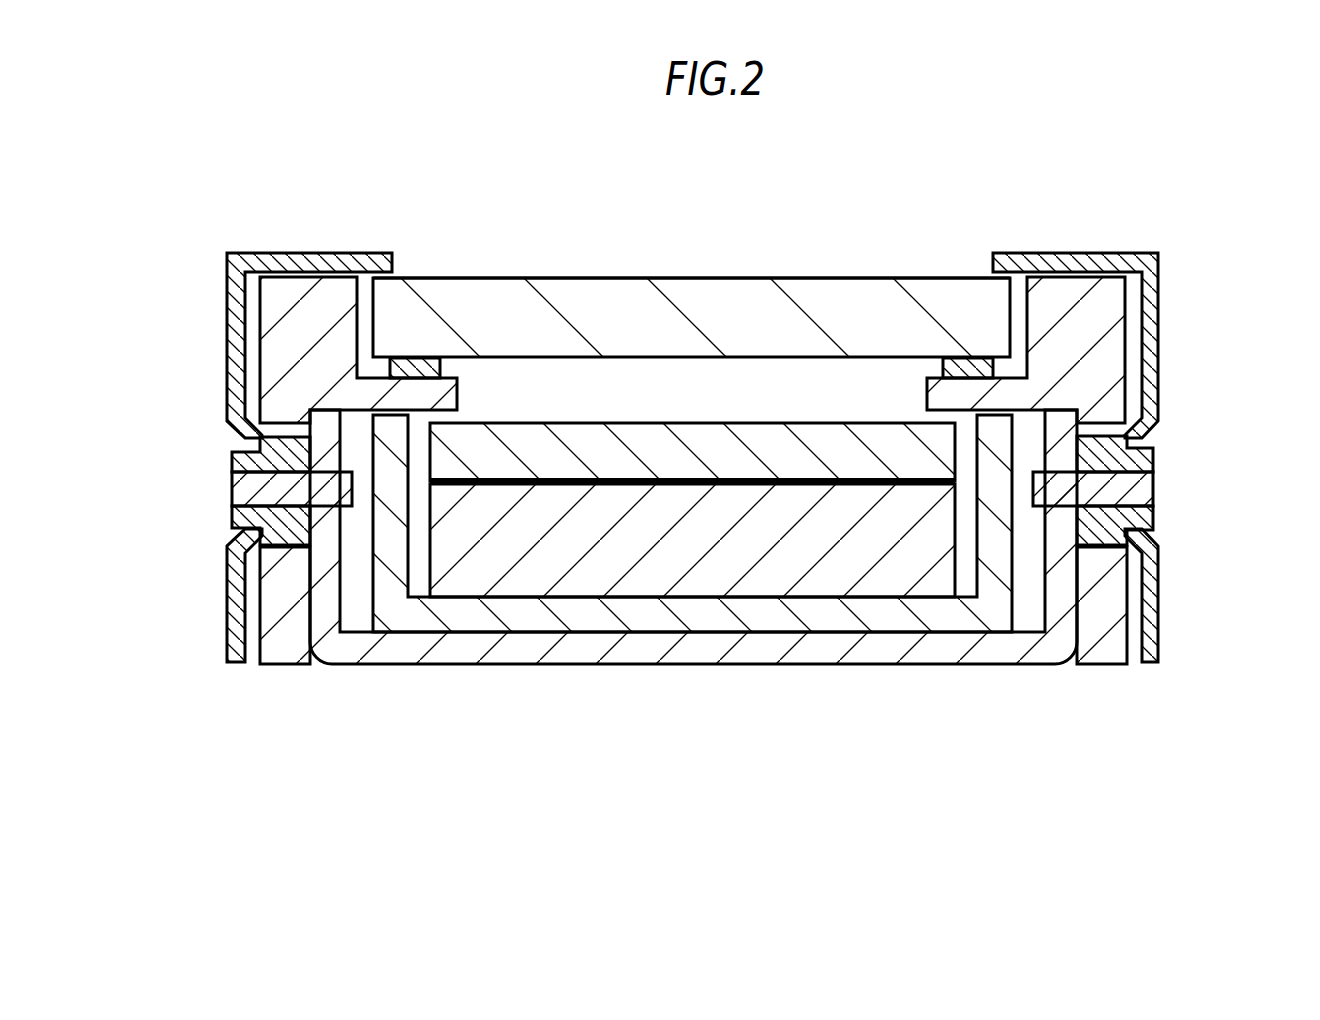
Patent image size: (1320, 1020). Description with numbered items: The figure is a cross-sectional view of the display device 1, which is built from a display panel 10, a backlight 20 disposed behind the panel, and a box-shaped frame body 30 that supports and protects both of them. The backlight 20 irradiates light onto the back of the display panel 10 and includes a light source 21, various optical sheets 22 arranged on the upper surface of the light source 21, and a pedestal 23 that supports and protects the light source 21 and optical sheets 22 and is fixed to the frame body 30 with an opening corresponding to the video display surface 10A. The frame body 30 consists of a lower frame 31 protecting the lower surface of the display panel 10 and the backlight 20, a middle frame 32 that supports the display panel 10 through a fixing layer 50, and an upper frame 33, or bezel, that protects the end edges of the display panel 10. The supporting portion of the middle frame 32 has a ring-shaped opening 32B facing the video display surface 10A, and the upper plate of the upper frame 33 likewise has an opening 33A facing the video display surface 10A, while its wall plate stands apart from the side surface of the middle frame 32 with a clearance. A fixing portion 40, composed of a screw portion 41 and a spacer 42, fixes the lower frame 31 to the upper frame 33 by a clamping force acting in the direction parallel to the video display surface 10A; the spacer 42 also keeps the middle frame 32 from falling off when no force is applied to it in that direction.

The display device 1 is at (1157, 182).
The display panel 10 is at (842, 290).
The video display surface 10A is at (672, 277).
The backlight 20 is at (860, 752).
The light source 21 is at (575, 570).
The optical sheets 22 is at (700, 462).
The pedestal 23 is at (820, 620).
The frame body 30 is at (1173, 745).
The lower frame 31 is at (1033, 653).
The middle frame 32 is at (1097, 655).
The opening 32B is at (537, 400).
The upper frame 33 is at (1150, 655).
The opening 33A is at (407, 262).
The fixing portion 40 is at (167, 427).
The screw portion 41 is at (262, 493).
The spacer 42 is at (280, 446).
The fixing layer 50 is at (972, 372).